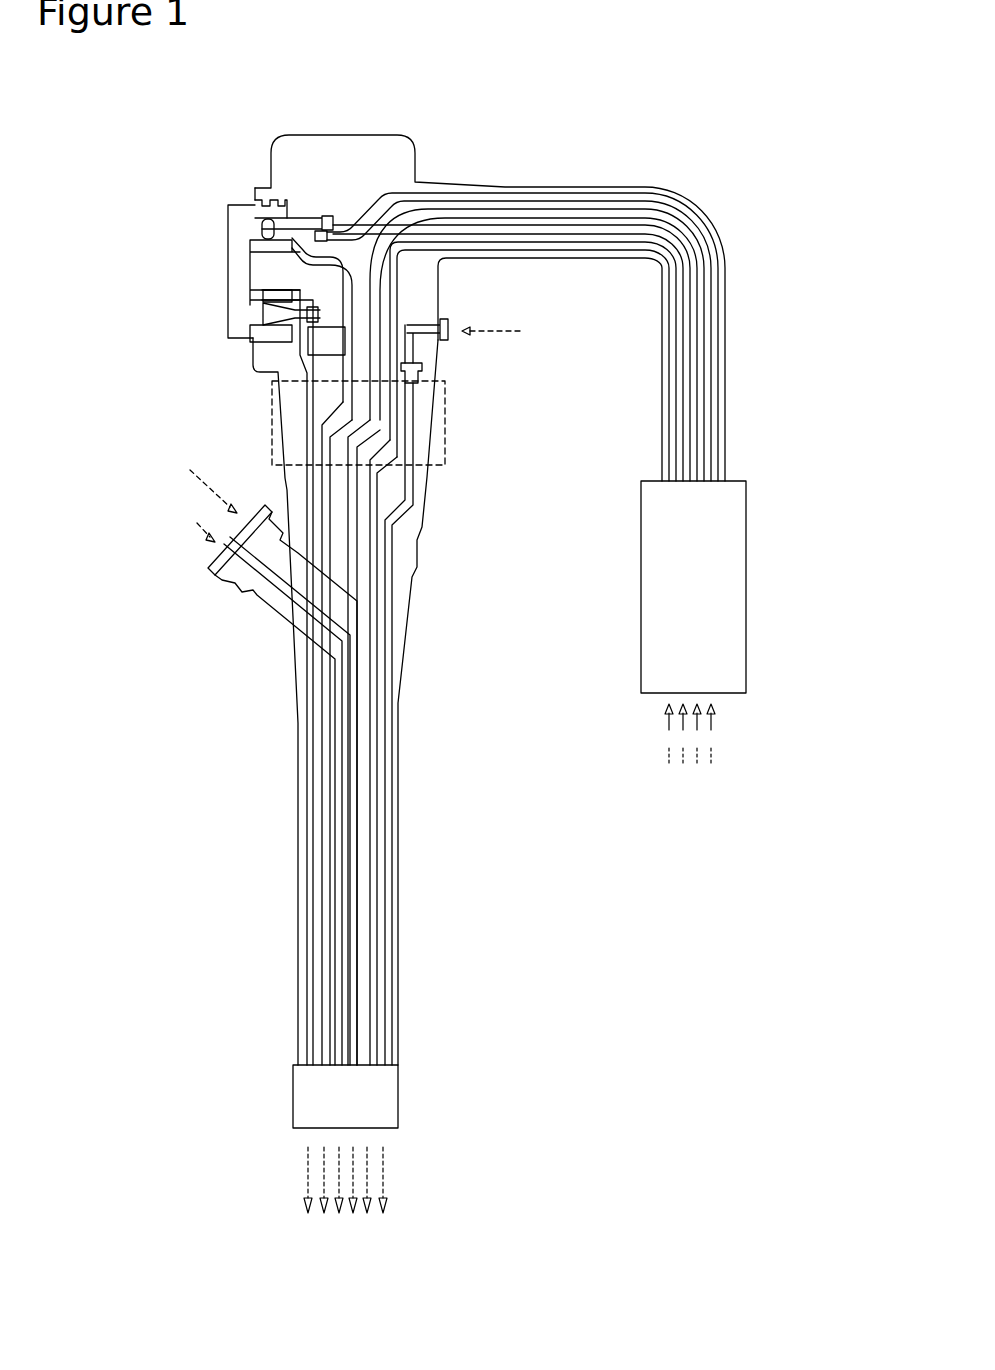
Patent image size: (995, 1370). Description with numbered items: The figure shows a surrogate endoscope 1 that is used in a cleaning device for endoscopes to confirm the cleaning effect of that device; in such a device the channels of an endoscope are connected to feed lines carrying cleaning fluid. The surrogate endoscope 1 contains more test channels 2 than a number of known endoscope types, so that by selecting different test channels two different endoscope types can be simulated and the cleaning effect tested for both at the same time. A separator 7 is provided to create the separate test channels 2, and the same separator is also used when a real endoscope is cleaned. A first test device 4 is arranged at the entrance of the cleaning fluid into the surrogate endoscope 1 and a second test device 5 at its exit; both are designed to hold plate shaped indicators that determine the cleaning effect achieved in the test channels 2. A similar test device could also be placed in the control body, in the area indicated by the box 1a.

The surrogate endoscope 1 is at (527, 738).
The box 1a is at (268, 421).
The test channels 2 is at (377, 988).
The first test device 4 is at (640, 603).
The second test device 5 is at (291, 1098).
The separator 7 is at (227, 273).